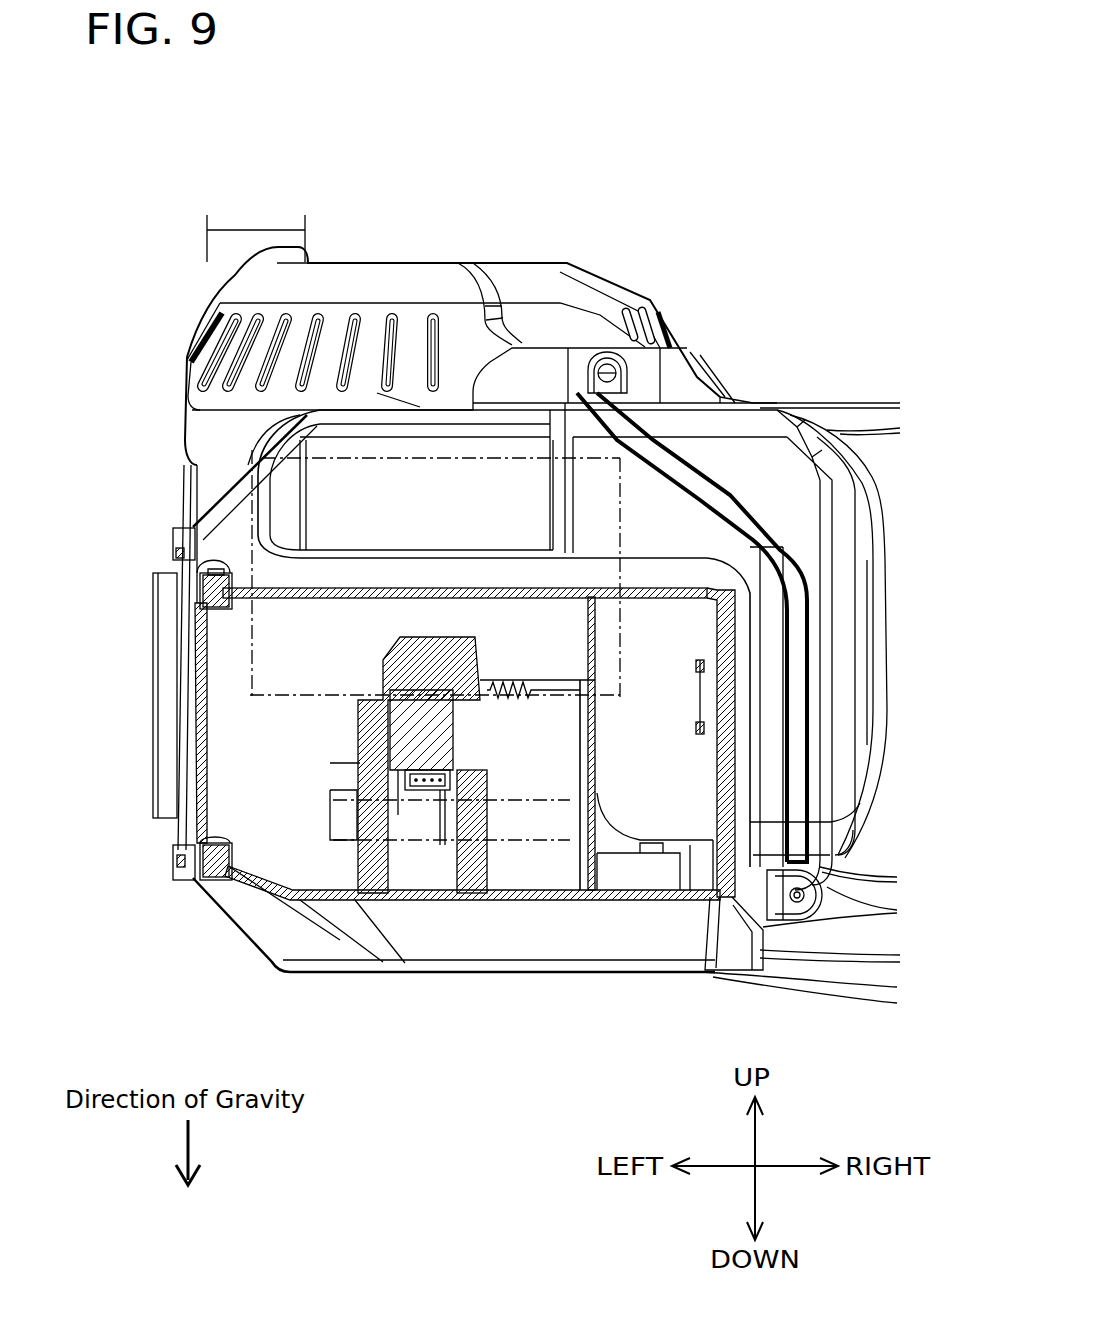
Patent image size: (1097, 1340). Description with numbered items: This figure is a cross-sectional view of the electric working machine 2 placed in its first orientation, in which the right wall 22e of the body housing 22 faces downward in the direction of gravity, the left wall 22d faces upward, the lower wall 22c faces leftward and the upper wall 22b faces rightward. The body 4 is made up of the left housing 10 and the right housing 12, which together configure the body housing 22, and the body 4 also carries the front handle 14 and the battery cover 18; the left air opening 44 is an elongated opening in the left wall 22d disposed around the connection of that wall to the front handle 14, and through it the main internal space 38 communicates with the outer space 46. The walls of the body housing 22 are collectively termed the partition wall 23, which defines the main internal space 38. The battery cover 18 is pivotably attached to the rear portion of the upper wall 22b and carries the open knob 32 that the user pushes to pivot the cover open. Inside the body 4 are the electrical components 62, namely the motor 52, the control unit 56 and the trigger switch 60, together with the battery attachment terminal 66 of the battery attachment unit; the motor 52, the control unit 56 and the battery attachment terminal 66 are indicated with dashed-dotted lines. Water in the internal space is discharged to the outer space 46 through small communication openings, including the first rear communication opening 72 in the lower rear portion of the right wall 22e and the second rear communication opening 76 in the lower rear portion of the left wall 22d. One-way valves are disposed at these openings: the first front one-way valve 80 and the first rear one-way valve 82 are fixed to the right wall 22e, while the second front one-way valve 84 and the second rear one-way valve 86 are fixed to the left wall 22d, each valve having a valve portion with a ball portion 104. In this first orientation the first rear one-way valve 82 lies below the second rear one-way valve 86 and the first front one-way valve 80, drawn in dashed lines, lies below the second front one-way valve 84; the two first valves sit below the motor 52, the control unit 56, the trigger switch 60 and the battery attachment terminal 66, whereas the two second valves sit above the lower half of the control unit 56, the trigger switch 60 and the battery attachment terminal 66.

The electric working machine 2 is at (180, 128).
The body 4 is at (172, 215).
The left housing 10 is at (210, 400).
The right housing 12 is at (643, 950).
The front handle 14 is at (207, 252).
The battery cover 18 is at (845, 668).
The body housing 22 is at (294, 425).
The upper wall 22b is at (767, 920).
The lower wall 22c is at (185, 480).
The left wall 22d is at (385, 277).
The right wall 22e is at (592, 972).
The partition wall 23 is at (212, 433).
The open knob 32 is at (605, 355).
The main internal space 38 is at (230, 720).
The left air opening 44 is at (190, 290).
The outer space 46 is at (745, 360).
The motor 52 is at (270, 663).
The control unit 56 is at (795, 570).
The trigger switch 60 is at (440, 790).
The electrical components 62 is at (383, 740).
The battery attachment terminal 66 is at (512, 840).
The first rear communication opening 72 is at (215, 850).
The second rear communication opening 76 is at (207, 600).
The first front one-way valve 80 is at (205, 883).
The first rear one-way valve 82 is at (243, 905).
The second front one-way valve 84 is at (175, 540).
The second rear one-way valve 86 is at (150, 620).
The ball portion 104 is at (207, 595).